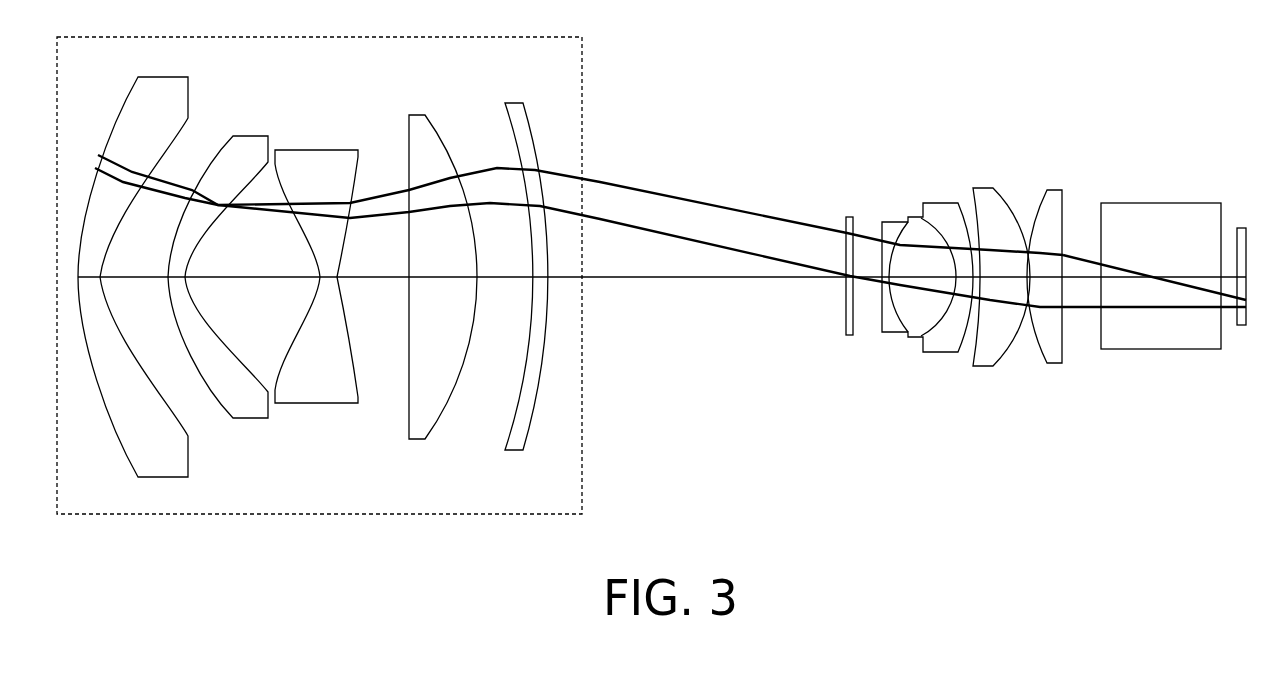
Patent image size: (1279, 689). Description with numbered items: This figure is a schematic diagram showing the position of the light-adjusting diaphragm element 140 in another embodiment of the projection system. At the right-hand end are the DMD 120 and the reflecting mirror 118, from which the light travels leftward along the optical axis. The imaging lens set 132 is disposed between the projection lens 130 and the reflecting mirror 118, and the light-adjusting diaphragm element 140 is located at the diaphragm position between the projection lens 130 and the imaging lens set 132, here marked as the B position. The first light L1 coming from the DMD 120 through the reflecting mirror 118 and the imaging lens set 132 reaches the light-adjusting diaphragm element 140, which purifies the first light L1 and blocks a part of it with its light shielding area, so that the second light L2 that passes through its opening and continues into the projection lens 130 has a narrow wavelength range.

The projection lens 130 is at (527, 37).
The imaging lens set 132 is at (982, 382).
The light-adjusting diaphragm element 140 is at (845, 322).
The B position B is at (821, 321).
The reflecting mirror 118 is at (1160, 349).
The DMD 120 is at (1247, 320).
The first light L1 is at (1080, 225).
The second light L2 is at (731, 183).